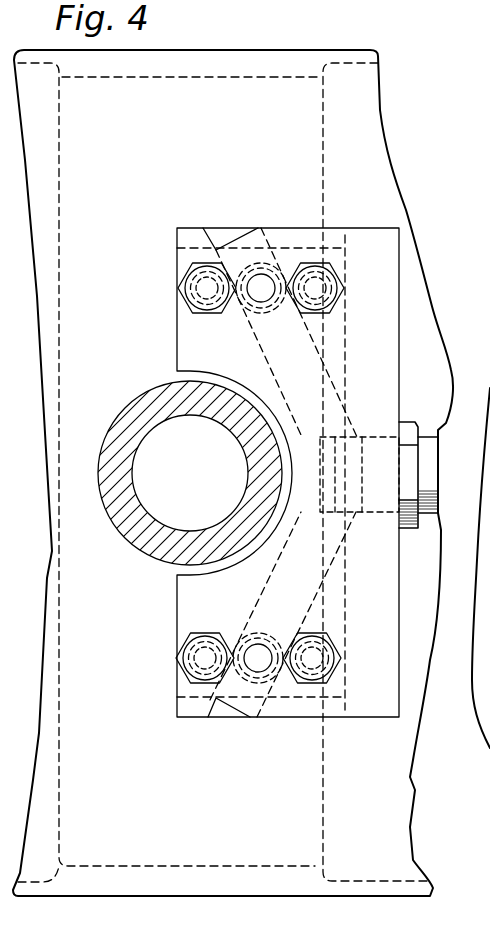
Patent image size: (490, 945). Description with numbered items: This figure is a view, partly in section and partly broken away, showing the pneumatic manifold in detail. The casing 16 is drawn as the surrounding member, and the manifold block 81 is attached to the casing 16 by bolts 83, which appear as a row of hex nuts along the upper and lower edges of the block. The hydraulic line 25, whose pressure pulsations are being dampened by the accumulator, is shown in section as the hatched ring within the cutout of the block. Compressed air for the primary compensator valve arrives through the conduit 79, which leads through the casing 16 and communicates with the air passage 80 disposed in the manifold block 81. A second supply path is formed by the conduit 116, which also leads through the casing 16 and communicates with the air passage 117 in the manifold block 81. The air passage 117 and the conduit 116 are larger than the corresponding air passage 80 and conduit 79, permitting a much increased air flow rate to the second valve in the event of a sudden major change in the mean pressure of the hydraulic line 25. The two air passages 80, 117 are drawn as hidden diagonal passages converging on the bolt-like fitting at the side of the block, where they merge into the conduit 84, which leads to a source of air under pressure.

The casing 16 is at (246, 152).
The hydraulic line 25 is at (132, 410).
The conduit 79 is at (257, 636).
The air passage 80 is at (323, 590).
The manifold block 81 is at (296, 224).
The bolts 83 is at (178, 286).
The conduit 84 is at (427, 437).
The conduit 116 is at (202, 356).
The air passage 117 is at (318, 360).